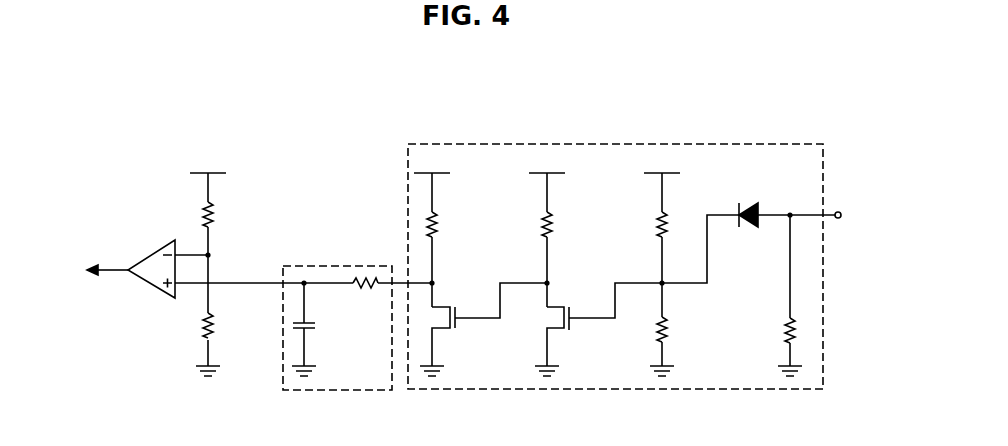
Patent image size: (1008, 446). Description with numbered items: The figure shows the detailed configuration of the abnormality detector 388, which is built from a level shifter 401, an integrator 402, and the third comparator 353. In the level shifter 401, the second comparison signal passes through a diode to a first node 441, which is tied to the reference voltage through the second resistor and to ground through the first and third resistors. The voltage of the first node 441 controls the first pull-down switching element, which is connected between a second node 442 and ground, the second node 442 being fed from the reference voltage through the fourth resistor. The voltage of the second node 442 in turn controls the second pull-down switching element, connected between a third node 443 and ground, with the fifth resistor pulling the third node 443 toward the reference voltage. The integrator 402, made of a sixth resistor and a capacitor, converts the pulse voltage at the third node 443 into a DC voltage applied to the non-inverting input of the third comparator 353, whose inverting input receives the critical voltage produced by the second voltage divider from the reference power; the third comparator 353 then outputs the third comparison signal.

The abnormality detector 388 is at (357, 99).
The level shifter 401 is at (615, 144).
The integrator 402 is at (335, 266).
The third comparator 353 is at (147, 290).
The first node 441 is at (664, 285).
The second node 442 is at (549, 282).
The third node 443 is at (434, 282).